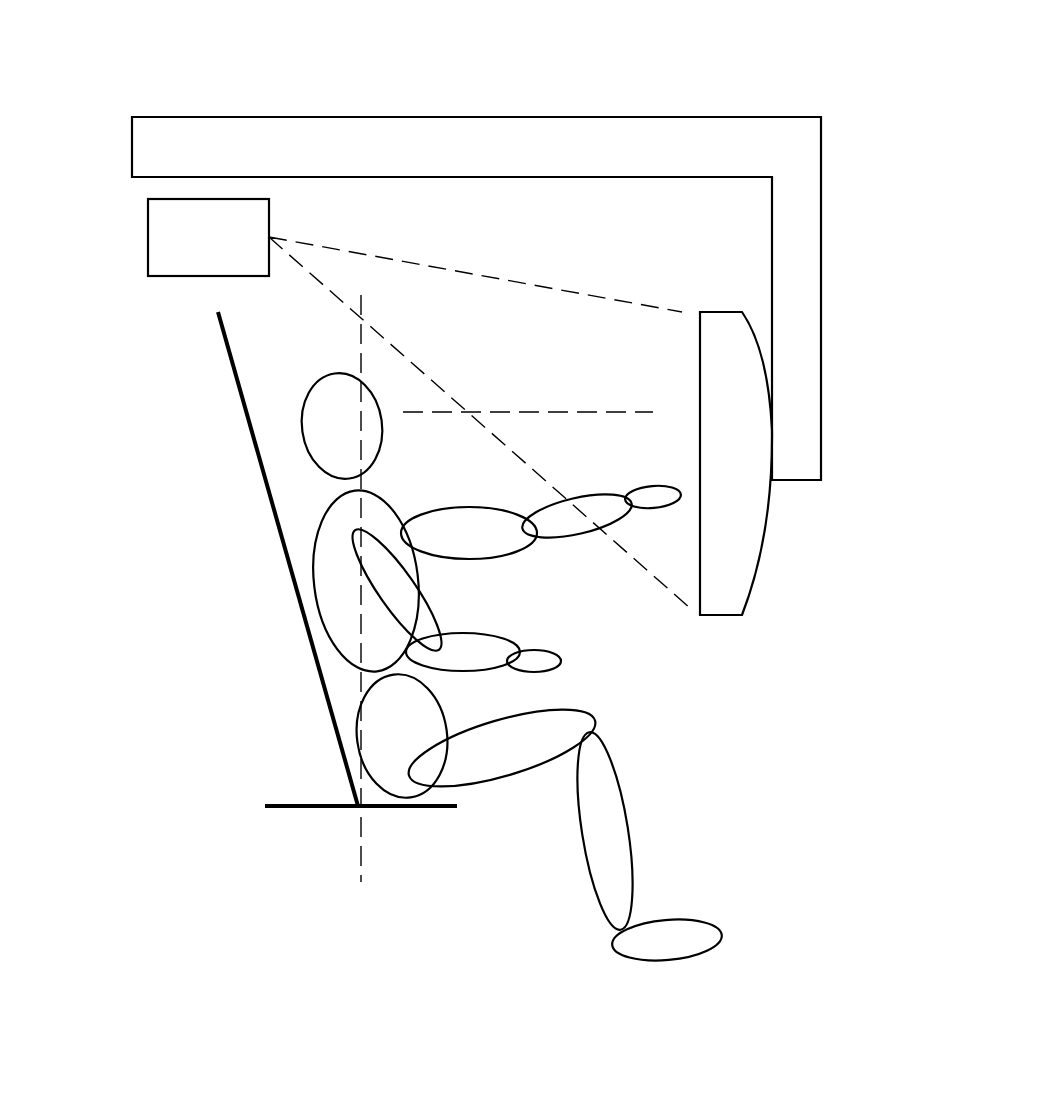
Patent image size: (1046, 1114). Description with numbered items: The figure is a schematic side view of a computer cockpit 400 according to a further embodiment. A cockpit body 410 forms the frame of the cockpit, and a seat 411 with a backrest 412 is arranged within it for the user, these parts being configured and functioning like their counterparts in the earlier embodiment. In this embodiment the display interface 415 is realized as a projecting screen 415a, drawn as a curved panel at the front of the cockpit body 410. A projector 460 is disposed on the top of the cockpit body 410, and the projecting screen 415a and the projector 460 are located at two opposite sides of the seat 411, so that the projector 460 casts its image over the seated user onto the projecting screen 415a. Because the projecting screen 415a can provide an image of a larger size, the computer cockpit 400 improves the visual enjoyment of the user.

The computer cockpit 400 is at (802, 77).
The cockpit body 410 is at (483, 134).
The seat 411 is at (375, 810).
The backrest 412 is at (267, 482).
The display interface 415 is at (701, 425).
The projecting screen 415a is at (719, 318).
The projector 460 is at (162, 240).